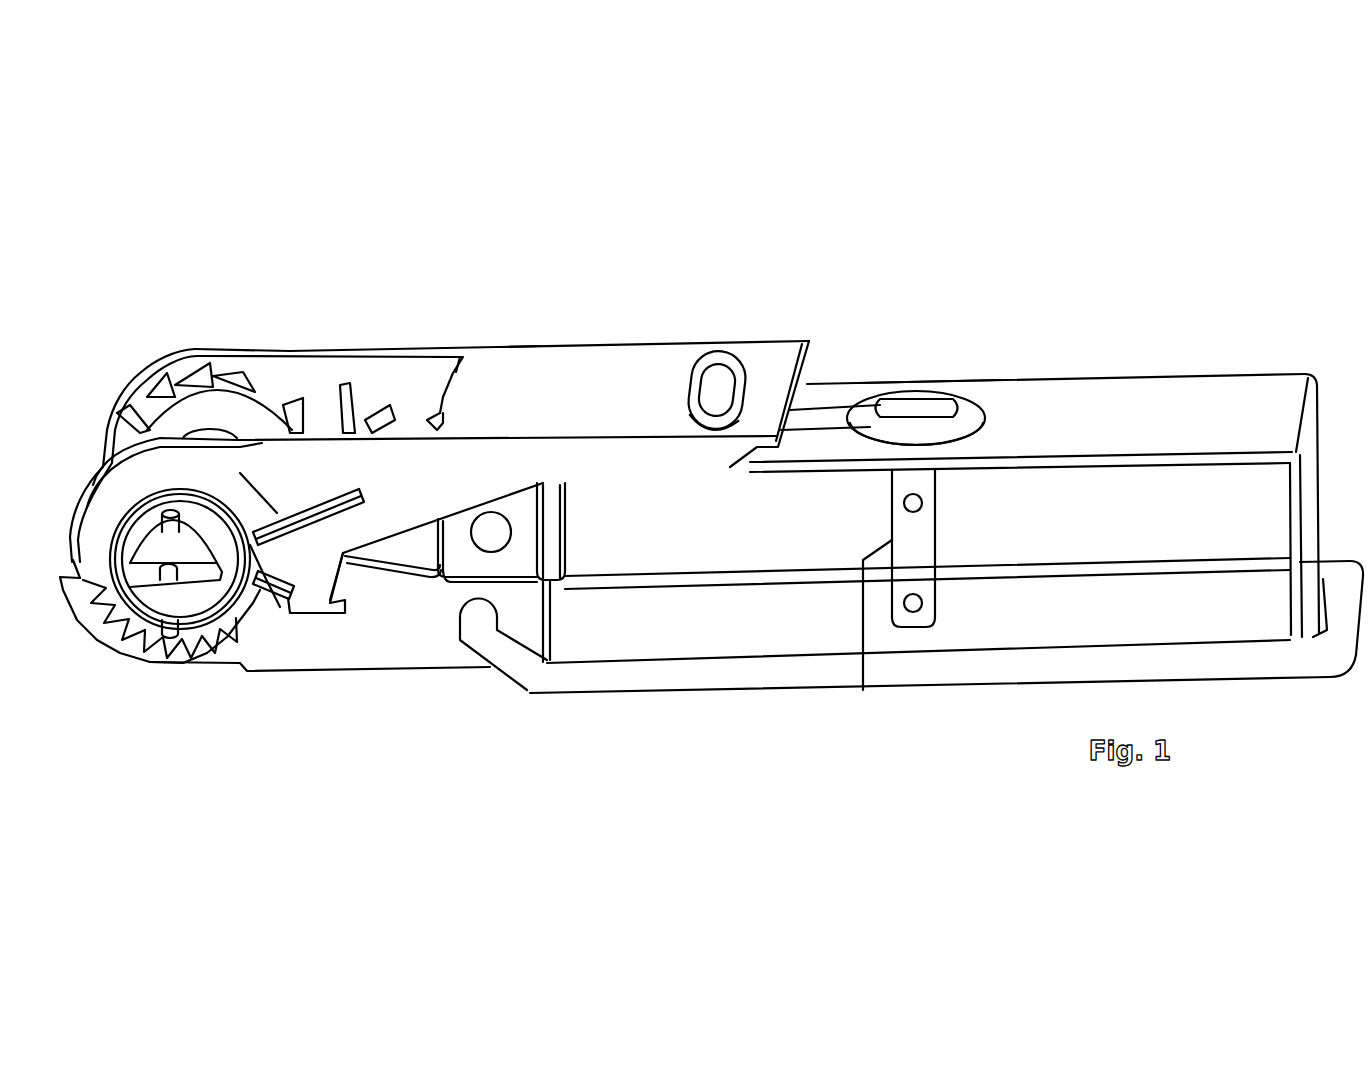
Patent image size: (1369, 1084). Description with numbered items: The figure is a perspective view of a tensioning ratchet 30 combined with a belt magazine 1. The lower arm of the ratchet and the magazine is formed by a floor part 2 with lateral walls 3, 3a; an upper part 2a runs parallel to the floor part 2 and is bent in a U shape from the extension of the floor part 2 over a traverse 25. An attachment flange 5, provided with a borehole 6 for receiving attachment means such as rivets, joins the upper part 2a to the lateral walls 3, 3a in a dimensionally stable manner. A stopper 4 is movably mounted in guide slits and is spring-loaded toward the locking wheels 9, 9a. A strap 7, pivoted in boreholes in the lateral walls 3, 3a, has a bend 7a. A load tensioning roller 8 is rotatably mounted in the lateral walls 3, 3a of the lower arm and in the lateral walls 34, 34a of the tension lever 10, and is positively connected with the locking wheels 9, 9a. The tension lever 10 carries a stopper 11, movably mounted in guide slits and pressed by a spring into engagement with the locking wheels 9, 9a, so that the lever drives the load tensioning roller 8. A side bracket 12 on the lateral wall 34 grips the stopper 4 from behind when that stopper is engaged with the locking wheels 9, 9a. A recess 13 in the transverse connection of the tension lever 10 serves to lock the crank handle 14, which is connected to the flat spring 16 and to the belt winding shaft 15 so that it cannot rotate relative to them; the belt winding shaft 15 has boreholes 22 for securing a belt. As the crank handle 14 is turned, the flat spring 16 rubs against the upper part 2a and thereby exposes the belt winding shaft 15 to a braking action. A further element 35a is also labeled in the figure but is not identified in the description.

The belt magazine 1 is at (1012, 375).
The floor part 2 is at (672, 620).
The upper part 2a is at (1176, 400).
The lateral wall 3 is at (375, 650).
The lateral wall 3a is at (567, 583).
The stopper 4 is at (277, 597).
The attachment flange 5 is at (485, 567).
The borehole 6 is at (482, 535).
The strap 7 is at (767, 677).
The bend 7a is at (533, 683).
The load tensioning roller 8 is at (190, 593).
The locking wheel 9 is at (228, 628).
The locking wheel 9a is at (193, 367).
The tension lever 10 is at (617, 380).
The stopper 11 is at (240, 470).
The side bracket 12 is at (312, 613).
The recess 13 is at (738, 363).
The crank handle 14 is at (827, 409).
The belt winding shaft 15 is at (920, 553).
The flat spring 16 is at (967, 413).
The boreholes 22 is at (913, 603).
The traverse 25 is at (1298, 492).
The tensioning ratchet 30 is at (458, 352).
The lateral wall 34 is at (517, 460).
The lateral wall 34a is at (398, 390).
The cam 35a is at (303, 433).